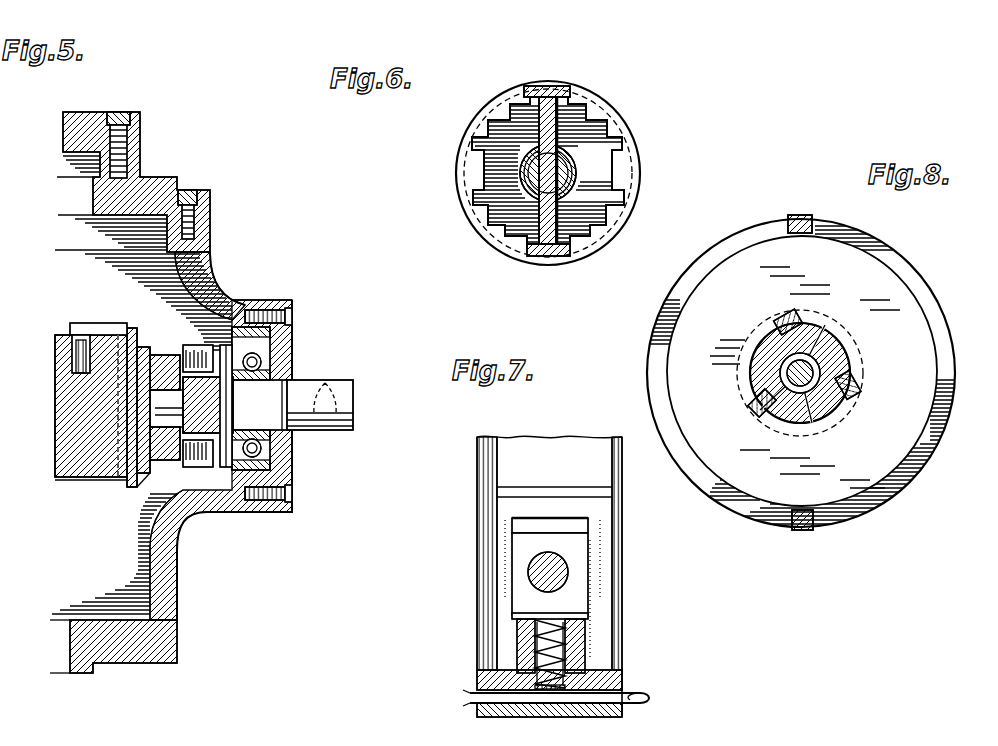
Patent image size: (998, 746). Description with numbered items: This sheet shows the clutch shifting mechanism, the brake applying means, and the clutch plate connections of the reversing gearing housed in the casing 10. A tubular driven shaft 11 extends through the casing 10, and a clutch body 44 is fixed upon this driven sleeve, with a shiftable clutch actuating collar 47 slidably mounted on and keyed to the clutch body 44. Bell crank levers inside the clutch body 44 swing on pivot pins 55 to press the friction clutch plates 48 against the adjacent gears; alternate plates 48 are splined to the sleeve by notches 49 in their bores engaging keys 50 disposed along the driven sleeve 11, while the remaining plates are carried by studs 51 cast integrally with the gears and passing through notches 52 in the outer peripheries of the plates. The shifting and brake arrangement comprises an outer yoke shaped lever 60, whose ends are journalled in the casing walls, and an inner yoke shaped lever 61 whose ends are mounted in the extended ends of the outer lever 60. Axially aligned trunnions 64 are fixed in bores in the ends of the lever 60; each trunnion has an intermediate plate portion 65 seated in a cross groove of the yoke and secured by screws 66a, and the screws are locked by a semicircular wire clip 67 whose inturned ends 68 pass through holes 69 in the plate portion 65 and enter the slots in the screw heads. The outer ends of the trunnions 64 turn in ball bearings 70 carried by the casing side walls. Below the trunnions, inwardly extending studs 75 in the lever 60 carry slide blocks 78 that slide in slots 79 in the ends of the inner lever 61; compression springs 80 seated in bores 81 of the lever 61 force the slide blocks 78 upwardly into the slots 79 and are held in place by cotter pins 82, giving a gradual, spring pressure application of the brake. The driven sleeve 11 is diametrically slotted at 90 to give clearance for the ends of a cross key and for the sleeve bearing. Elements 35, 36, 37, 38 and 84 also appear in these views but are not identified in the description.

In FIG. 5, the casing 10 is at (140, 235).
In FIG. 6, the driven shaft 11 is at (582, 110).
In FIG. 8, the driven shaft 11 is at (848, 340).
In FIG. 6, the hub 35 is at (530, 185).
In FIG. 6, the bore 36 is at (568, 185).
In FIG. 6, the key bar 37 is at (560, 150).
In FIG. 6, the key plate 38 is at (560, 168).
In FIG. 5, the clutch body 44 is at (65, 487).
In FIG. 5, the clutch actuating collar 47 is at (143, 352).
In FIG. 8, the friction clutch plates 48 is at (858, 265).
In FIG. 8, the notches 49 is at (818, 330).
In FIG. 8, the keys 50 is at (790, 315).
In FIG. 8, the studs 51 is at (798, 215).
In FIG. 8, the notches 52 is at (813, 222).
In FIG. 5, the pivot pins 55 is at (78, 355).
In FIG. 5, the outer yoke shaped lever 60 is at (221, 320).
In FIG. 5, the inner yoke shaped lever 61 is at (134, 487).
In FIG. 7, the inner yoke shaped lever 61 is at (487, 470).
In FIG. 5, the trunnions 64 is at (340, 385).
In FIG. 5, the plate portions 65 is at (190, 447).
In FIG. 5, the screws 66a is at (245, 318).
In FIG. 5, the wire clip 67 is at (247, 318).
In FIG. 5, the inturned ends 68 is at (222, 497).
In FIG. 5, the holes 69 is at (201, 485).
In FIG. 5, the ball bearings 70 is at (292, 362).
In FIG. 5, the studs 75 is at (155, 400).
In FIG. 7, the studs 75 is at (528, 572).
In FIG. 5, the slide blocks 78 is at (68, 470).
In FIG. 7, the slide blocks 78 is at (520, 595).
In FIG. 7, the slots 79 is at (512, 530).
In FIG. 7, the springs 80 is at (575, 608).
In FIG. 7, the bores 81 is at (580, 650).
In FIG. 7, the cotter pins 82 is at (645, 690).
In FIG. 8, the bore 84 is at (822, 418).
In FIG. 6, the diametric slot 90 is at (570, 86).